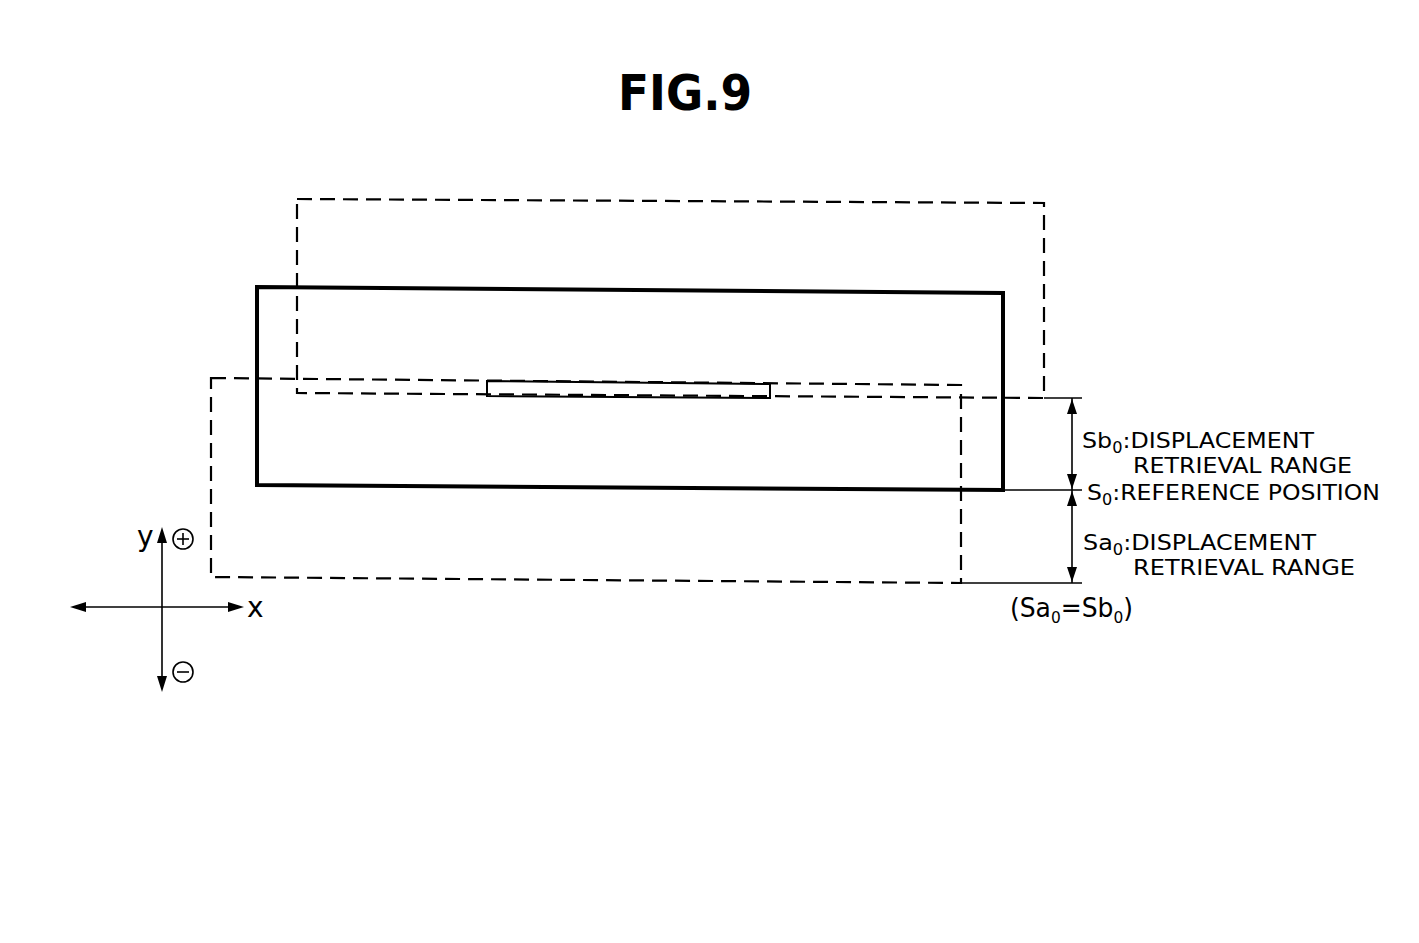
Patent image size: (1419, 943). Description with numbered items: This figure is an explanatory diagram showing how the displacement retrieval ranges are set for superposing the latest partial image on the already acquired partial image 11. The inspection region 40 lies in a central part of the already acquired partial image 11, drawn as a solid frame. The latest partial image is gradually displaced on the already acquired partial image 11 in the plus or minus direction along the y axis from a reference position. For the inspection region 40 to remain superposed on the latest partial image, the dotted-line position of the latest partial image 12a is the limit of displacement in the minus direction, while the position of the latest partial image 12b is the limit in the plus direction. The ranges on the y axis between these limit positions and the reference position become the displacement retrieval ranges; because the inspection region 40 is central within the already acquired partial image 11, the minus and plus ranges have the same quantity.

The already acquired partial image 11 is at (446, 286).
The latest partial image 12a is at (507, 580).
The latest partial image 12b is at (443, 199).
The inspection region 40 is at (546, 382).